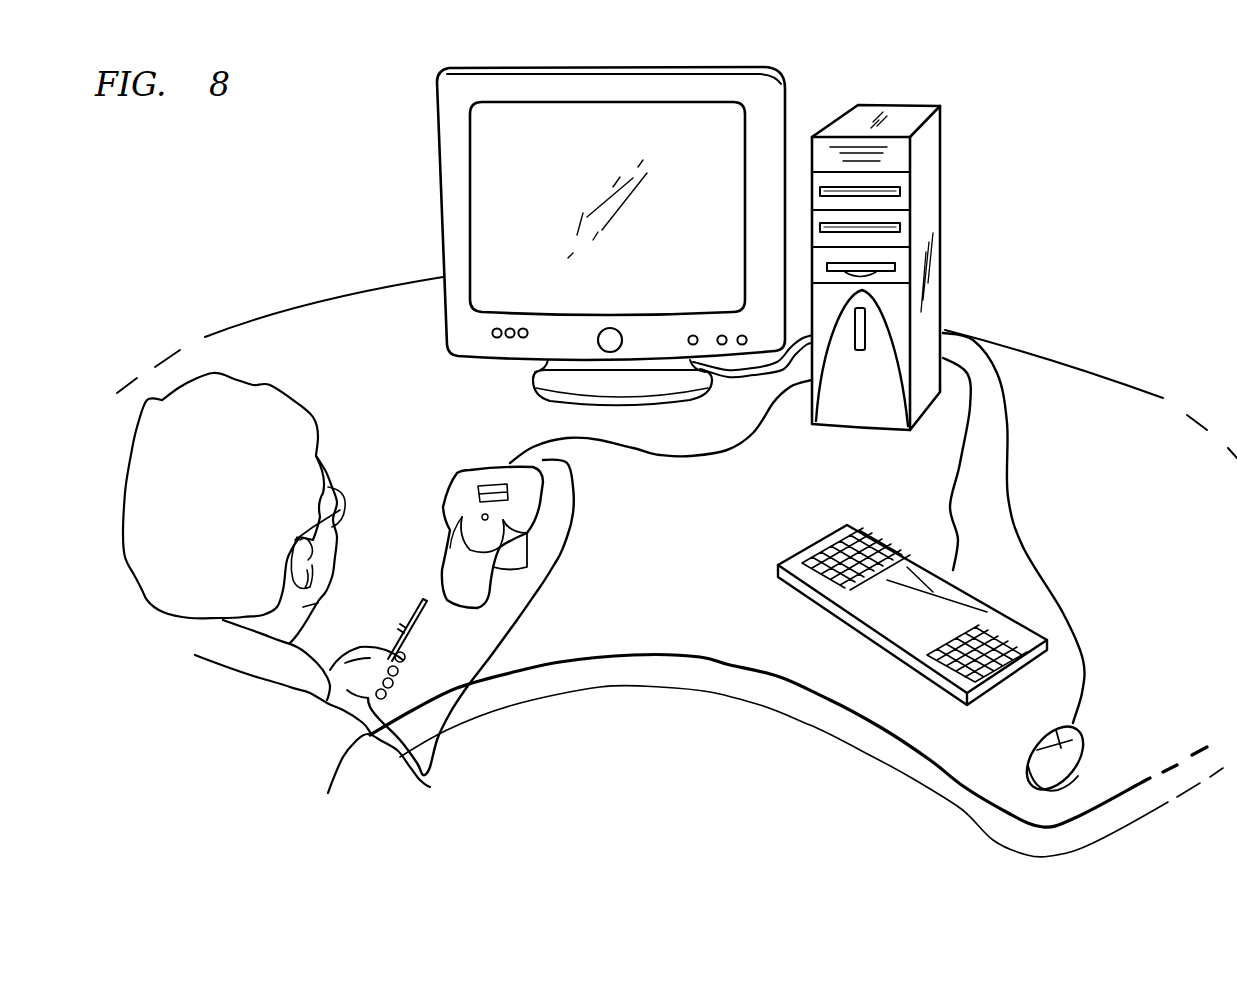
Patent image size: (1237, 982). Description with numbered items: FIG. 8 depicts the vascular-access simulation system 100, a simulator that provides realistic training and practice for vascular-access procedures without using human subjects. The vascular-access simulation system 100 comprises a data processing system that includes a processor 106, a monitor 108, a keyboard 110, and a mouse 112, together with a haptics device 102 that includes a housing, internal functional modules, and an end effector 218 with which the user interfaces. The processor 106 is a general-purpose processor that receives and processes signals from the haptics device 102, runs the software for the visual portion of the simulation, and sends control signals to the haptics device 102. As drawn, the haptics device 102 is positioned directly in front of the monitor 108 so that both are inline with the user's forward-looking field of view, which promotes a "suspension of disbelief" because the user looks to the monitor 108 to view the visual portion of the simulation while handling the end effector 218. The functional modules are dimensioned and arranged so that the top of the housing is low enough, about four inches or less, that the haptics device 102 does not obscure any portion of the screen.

The vascular-access simulation system 100 is at (176, 163).
The haptics device 102 is at (480, 473).
The processor 106 is at (933, 183).
The monitor 108 is at (437, 130).
The keyboard 110 is at (817, 545).
The mouse 112 is at (1075, 740).
The end effector 218 is at (413, 617).